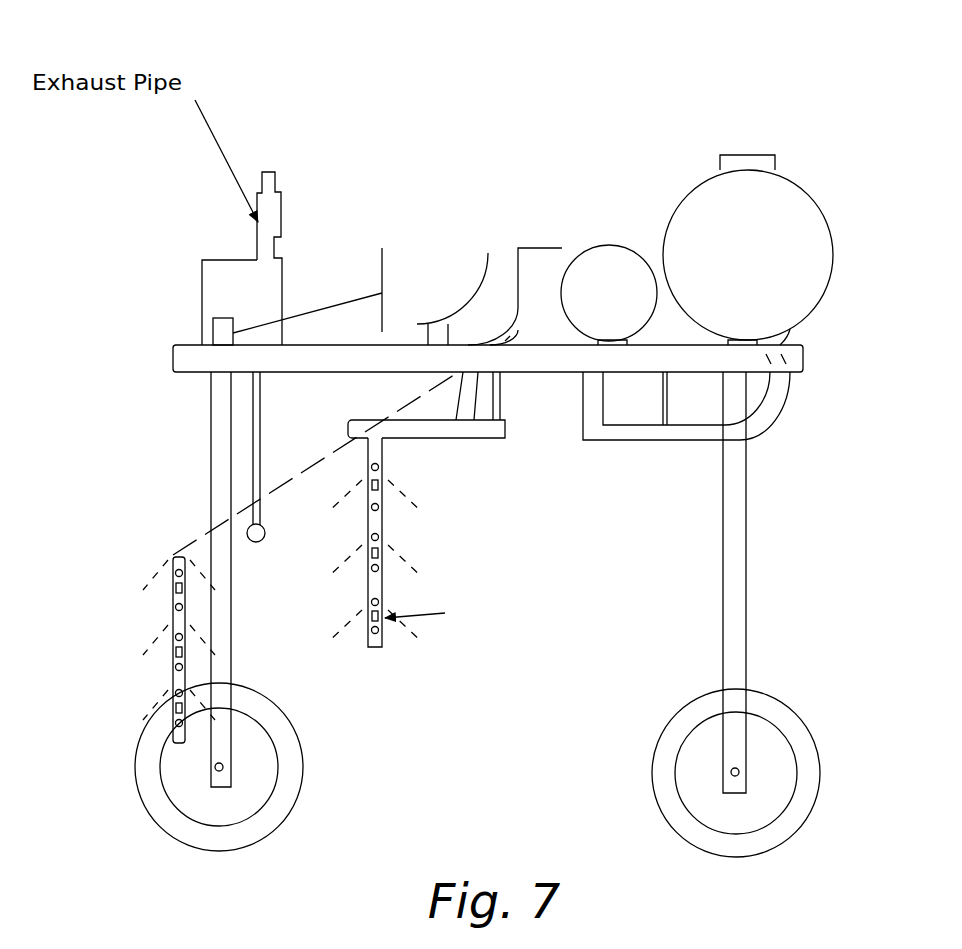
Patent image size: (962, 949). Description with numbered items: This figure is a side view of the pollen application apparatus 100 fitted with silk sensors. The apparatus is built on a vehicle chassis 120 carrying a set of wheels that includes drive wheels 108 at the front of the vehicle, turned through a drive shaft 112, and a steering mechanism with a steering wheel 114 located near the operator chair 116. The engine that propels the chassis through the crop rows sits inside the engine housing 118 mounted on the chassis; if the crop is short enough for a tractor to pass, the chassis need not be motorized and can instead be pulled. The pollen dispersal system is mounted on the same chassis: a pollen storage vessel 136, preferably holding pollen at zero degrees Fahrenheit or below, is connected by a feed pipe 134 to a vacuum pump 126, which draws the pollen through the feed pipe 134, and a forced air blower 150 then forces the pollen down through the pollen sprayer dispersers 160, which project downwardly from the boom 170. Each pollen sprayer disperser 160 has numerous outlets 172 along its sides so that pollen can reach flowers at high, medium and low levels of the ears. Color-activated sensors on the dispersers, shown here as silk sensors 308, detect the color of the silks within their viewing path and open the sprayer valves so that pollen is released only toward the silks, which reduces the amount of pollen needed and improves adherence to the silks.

The pollen application apparatus 100 is at (158, 345).
The drive wheels 108 is at (302, 798).
The drive shaft 112 is at (220, 388).
The steering wheel 114 is at (382, 248).
The operator chair 116 is at (468, 288).
The engine housing 118 is at (222, 292).
The vehicle chassis 120 is at (756, 606).
The vacuum pump 126 is at (597, 272).
The feed pipe 134 is at (770, 402).
The pollen storage vessel 136 is at (817, 247).
The forced air blower 150 is at (539, 312).
The pollen sprayer disperser 160 is at (384, 593).
The boom 170 is at (352, 428).
The outlets 172 is at (373, 467).
The silk sensors 308 is at (382, 493).